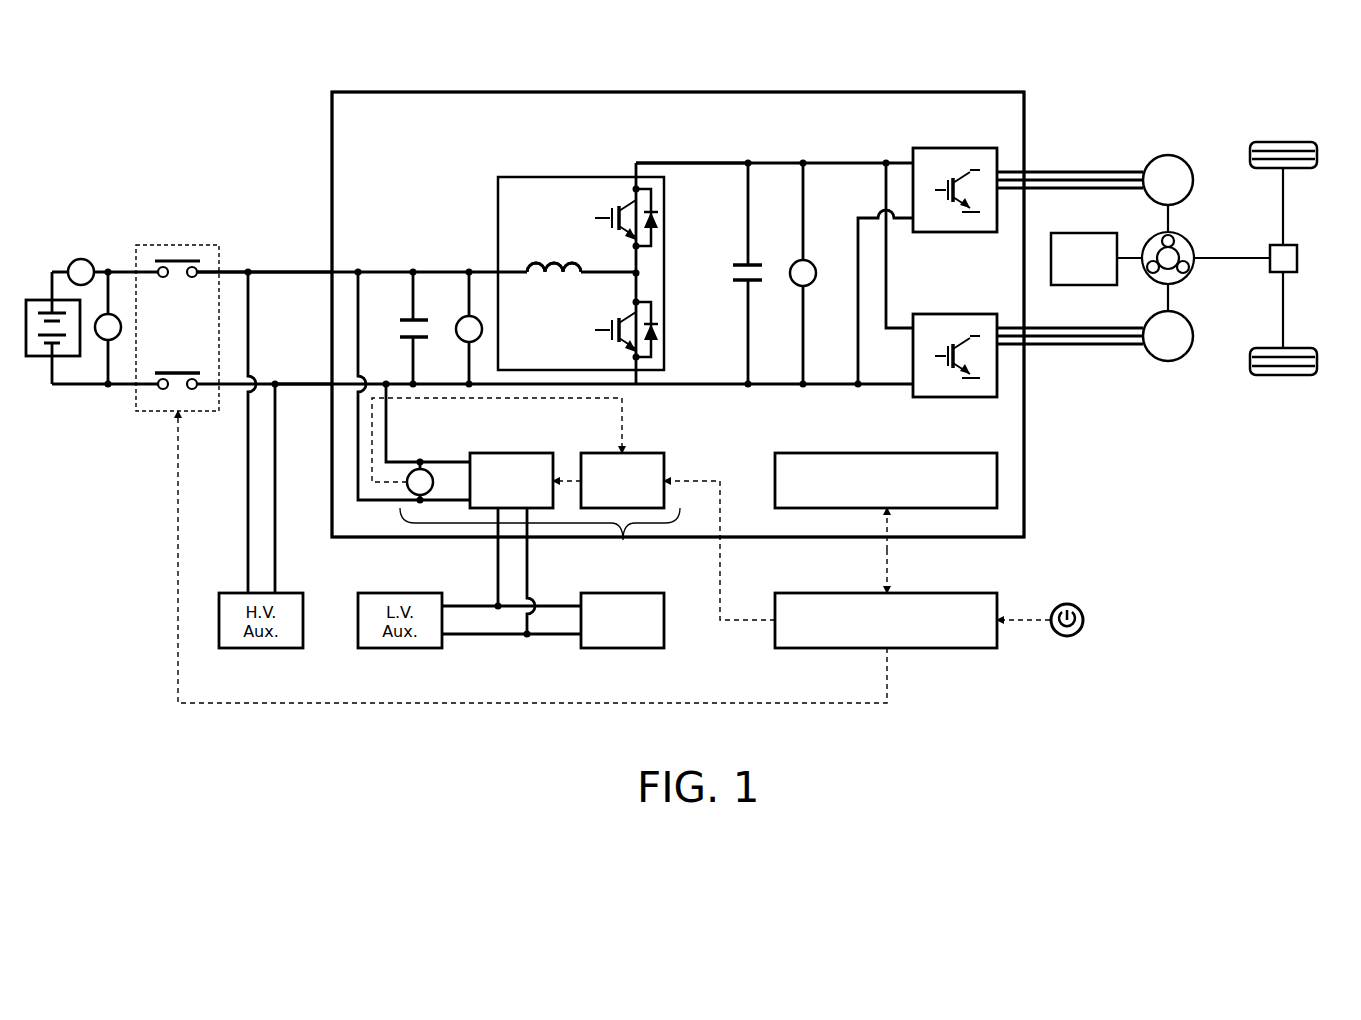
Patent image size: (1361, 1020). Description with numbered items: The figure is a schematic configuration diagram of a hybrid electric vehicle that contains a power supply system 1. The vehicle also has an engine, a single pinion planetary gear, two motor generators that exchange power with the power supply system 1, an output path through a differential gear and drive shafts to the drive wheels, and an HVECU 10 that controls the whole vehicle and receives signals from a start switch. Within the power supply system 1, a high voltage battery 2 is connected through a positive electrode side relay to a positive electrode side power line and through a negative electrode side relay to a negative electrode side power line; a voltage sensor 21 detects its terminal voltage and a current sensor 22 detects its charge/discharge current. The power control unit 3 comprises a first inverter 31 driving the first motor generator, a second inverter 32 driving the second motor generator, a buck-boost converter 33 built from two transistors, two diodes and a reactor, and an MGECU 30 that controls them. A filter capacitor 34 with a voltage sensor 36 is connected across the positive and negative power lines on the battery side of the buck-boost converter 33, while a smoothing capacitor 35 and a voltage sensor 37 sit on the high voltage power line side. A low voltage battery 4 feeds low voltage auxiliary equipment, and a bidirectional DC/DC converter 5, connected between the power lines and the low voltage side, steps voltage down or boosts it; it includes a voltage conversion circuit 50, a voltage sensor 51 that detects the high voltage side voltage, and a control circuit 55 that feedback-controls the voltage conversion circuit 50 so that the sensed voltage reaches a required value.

The power supply system 1 is at (178, 140).
The high voltage battery 2 is at (40, 300).
The power control unit 3 is at (1033, 132).
The low voltage battery 4 is at (648, 648).
The bidirectional DC/DC converter 5 is at (540, 542).
The HVECU 10 is at (988, 648).
The voltage sensor 21 is at (100, 340).
The current sensor 22 is at (81, 258).
The MGECU 30 is at (884, 453).
The first inverter 31 is at (975, 148).
The second inverter 32 is at (975, 314).
The buck-boost converter 33 is at (580, 177).
The filter capacitor 34 is at (405, 318).
The smoothing capacitor 35 is at (752, 262).
The voltage sensor 36 is at (458, 316).
The voltage sensor 37 is at (815, 260).
The voltage conversion circuit 50 is at (557, 453).
The voltage sensor 51 is at (428, 470).
The control circuit 55 is at (668, 453).